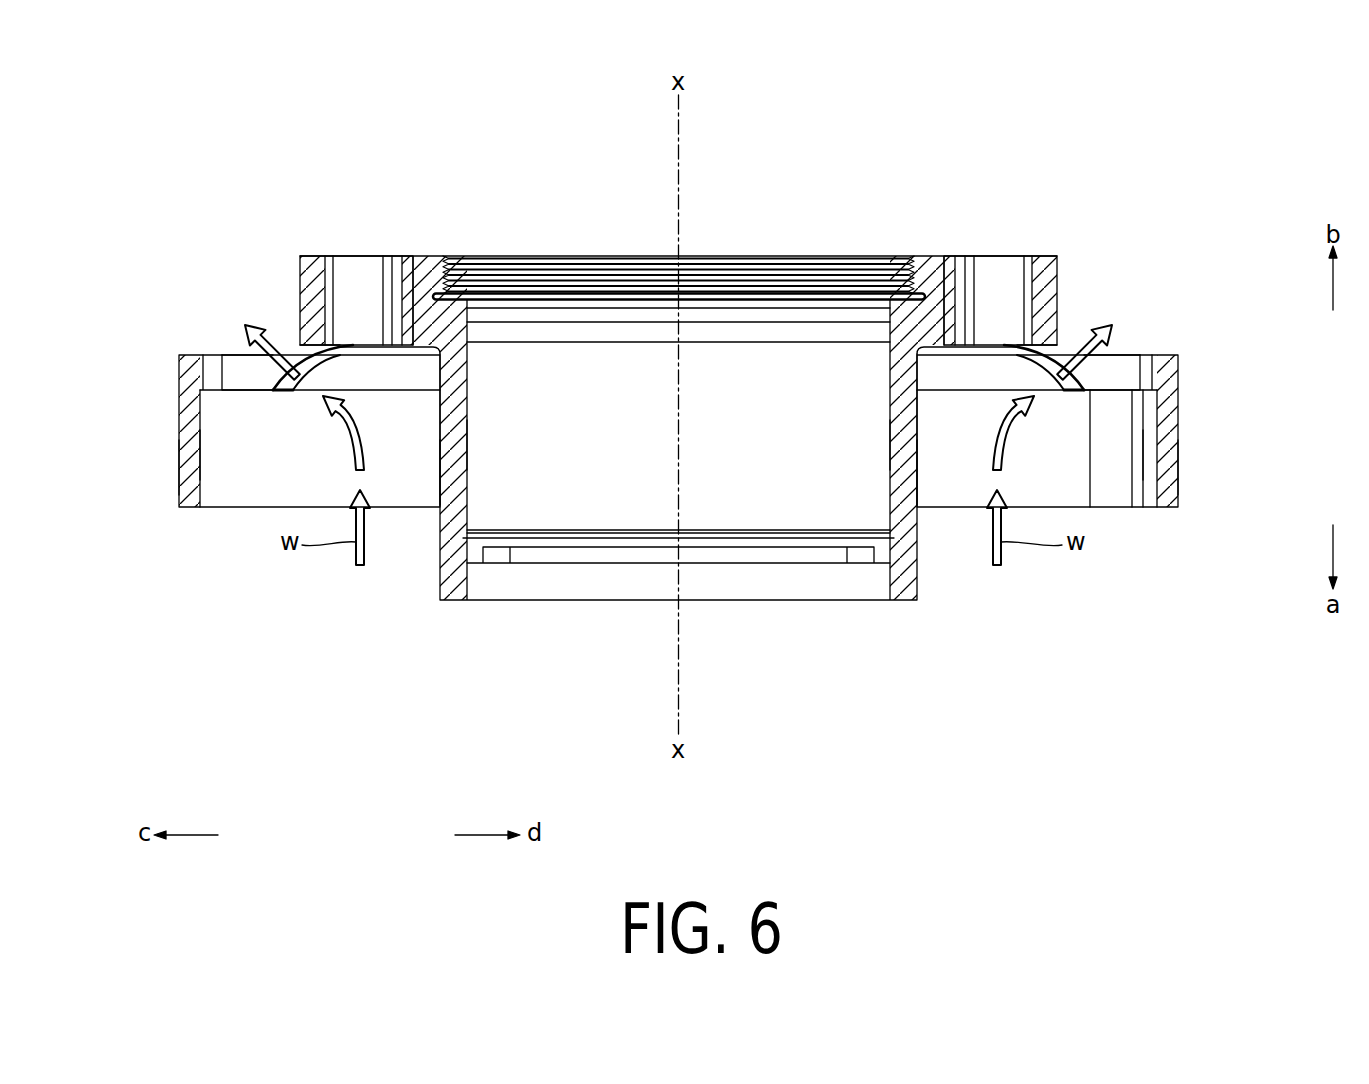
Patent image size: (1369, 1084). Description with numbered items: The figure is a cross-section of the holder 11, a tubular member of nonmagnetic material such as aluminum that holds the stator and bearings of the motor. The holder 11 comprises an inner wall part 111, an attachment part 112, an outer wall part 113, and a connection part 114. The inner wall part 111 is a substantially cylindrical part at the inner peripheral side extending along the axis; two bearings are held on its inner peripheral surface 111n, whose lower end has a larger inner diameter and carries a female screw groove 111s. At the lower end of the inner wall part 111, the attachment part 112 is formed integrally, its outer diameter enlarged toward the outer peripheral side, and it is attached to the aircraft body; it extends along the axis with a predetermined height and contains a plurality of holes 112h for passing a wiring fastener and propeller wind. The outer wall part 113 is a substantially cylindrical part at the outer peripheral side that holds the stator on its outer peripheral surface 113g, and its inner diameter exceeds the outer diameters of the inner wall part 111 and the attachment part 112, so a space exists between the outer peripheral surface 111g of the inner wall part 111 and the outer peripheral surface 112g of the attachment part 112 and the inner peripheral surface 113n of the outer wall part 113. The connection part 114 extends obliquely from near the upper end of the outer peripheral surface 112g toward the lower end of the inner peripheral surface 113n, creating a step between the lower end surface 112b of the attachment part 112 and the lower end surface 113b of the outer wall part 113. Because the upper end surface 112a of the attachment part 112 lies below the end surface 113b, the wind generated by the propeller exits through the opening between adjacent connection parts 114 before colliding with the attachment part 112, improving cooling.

The holder 11 is at (878, 68).
The inner wall part 111 is at (455, 565).
The female screw groove 111s is at (773, 256).
The outer peripheral surface of the inner wall part 111g is at (440, 473).
The inner peripheral surface of the inner wall part 111n is at (467, 445).
The attachment part 112 is at (337, 290).
The end surface at the upper side of the attachment part 112a is at (290, 352).
The end surface at the lower side of the attachment part 112b is at (317, 295).
The outer peripheral surface of the attachment part 112g is at (303, 340).
The hole 112h is at (360, 295).
The outer wall part 113 is at (187, 428).
The end surface at the lower side of the outer wall part 113b is at (200, 355).
The outer peripheral surface of the outer wall part 113g is at (179, 466).
The inner peripheral surface of the outer wall part 113n is at (202, 457).
The connection part 114 is at (232, 372).